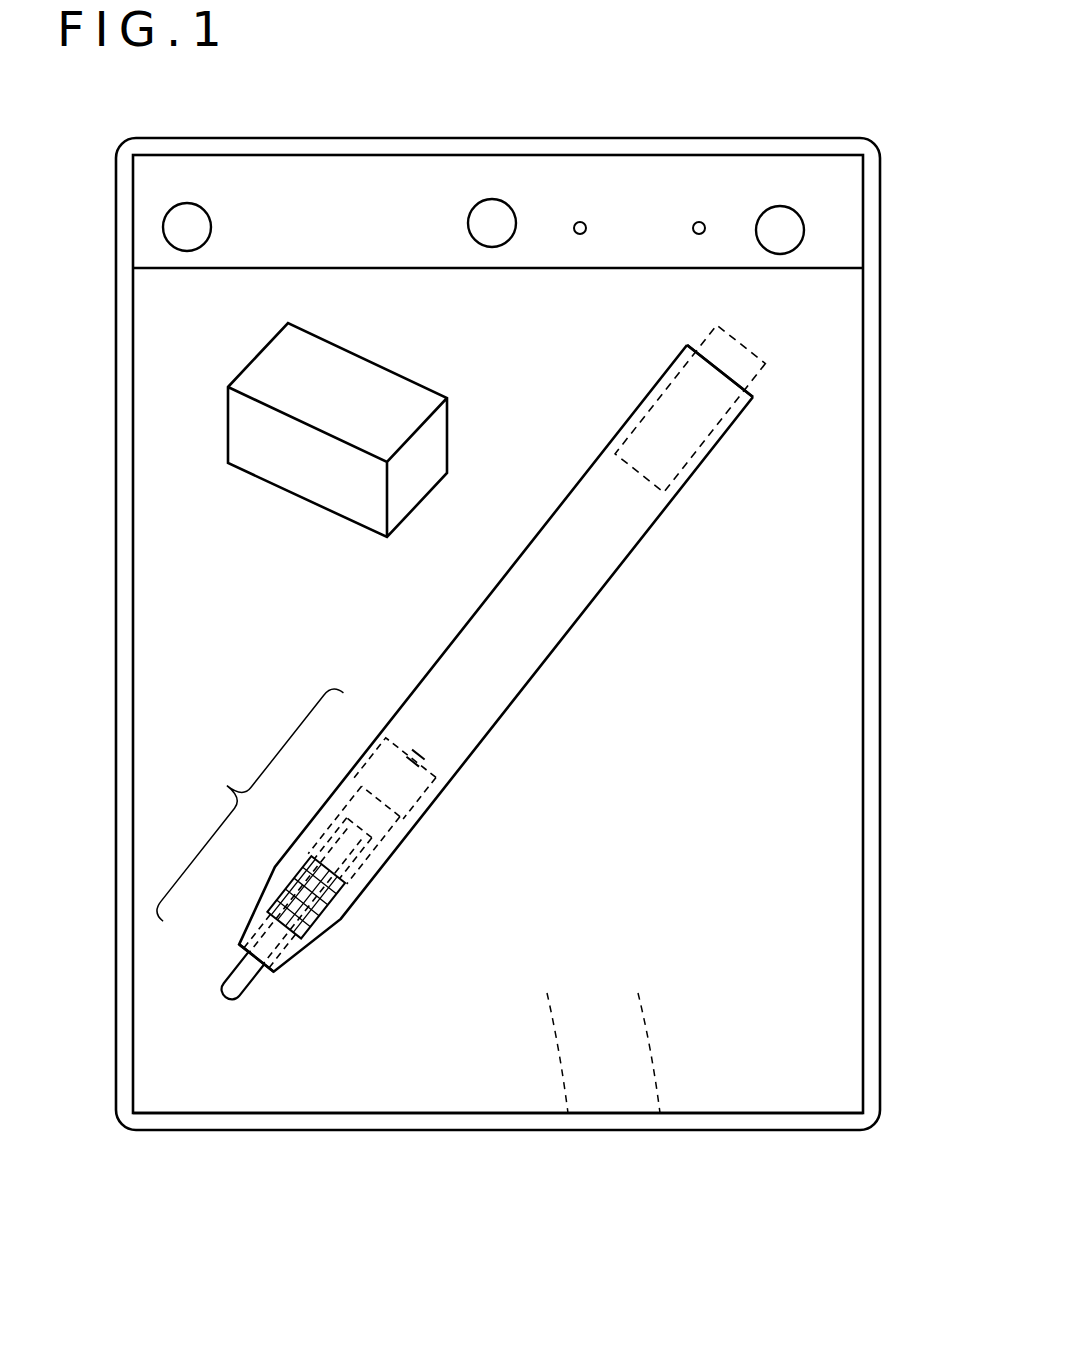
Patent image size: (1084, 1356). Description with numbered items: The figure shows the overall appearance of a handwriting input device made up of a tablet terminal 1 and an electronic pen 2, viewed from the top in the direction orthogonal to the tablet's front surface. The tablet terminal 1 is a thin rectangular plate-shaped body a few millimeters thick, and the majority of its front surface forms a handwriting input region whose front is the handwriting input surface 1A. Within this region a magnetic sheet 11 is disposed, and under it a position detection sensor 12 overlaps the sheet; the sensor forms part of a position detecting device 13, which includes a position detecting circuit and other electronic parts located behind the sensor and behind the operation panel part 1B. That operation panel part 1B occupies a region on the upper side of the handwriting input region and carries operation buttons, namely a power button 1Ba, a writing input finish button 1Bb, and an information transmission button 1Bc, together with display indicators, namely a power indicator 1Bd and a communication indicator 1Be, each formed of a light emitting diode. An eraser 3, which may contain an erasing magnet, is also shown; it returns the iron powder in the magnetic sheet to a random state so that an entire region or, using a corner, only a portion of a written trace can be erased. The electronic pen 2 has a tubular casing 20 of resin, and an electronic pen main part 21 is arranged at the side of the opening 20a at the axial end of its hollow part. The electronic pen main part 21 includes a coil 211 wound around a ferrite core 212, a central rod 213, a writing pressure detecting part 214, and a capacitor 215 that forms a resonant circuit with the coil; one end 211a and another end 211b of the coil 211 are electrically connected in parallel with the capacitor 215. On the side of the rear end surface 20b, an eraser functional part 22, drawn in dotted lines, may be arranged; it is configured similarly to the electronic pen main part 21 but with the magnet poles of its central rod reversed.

The tablet terminal 1 is at (201, 137).
The handwriting input surface 1A is at (220, 1087).
The operation panel part 1B is at (542, 177).
The power button 1Ba is at (790, 232).
The writing input finish button 1Bb is at (486, 210).
The information transmission button 1Bc is at (170, 228).
The power indicator 1Bd is at (698, 220).
The communication indicator 1Be is at (582, 220).
The magnetic sheet 11 is at (349, 1040).
The position detection sensor 12 is at (660, 1113).
The position detecting device 13 is at (568, 1113).
The electronic pen 2 is at (464, 660).
The tubular casing 20 is at (530, 540).
The opening 20a is at (272, 972).
The rear end surface 20b is at (695, 345).
The electronic pen main part 21 is at (239, 796).
The coil 211 is at (302, 875).
The one end of the coil 211a is at (328, 813).
The another end of the coil 211b is at (398, 852).
The ferrite core 212 is at (237, 962).
The central rod 213 is at (222, 987).
The writing pressure detecting part 214 is at (362, 790).
The capacitor 215 is at (413, 750).
The eraser functional part 22 is at (743, 352).
The eraser 3 is at (373, 390).